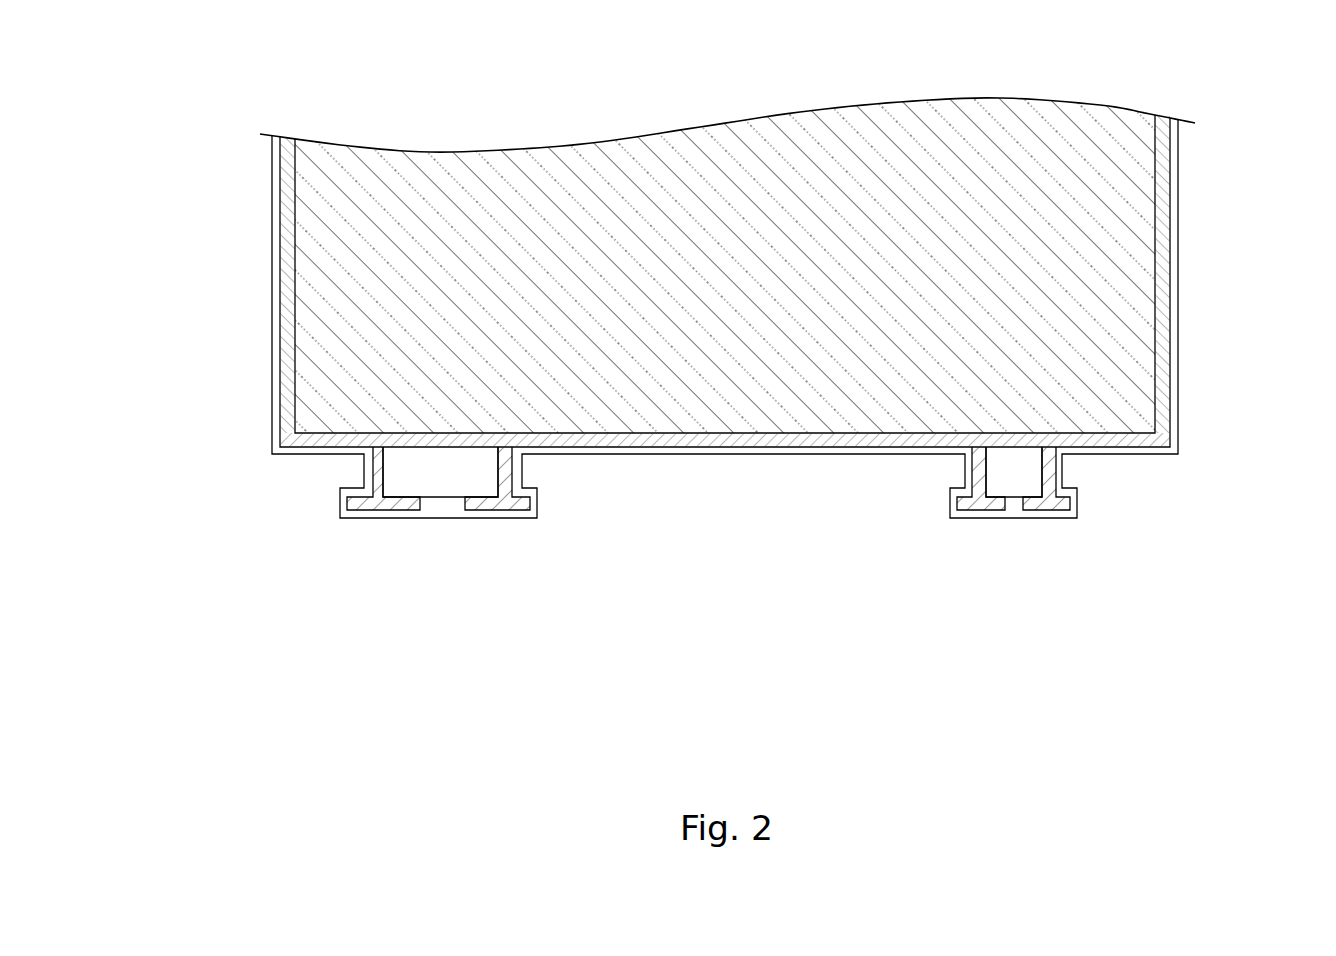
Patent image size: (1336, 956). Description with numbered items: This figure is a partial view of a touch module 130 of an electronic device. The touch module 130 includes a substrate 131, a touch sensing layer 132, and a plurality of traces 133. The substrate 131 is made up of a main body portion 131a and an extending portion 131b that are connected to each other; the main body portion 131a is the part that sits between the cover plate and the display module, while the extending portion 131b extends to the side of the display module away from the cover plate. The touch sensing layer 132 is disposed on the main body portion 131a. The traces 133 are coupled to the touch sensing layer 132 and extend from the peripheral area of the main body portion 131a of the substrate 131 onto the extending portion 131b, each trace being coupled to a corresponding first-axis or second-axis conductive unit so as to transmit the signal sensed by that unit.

The touch module 130 is at (208, 47).
The substrate 131 is at (197, 373).
The main body portion 131a is at (272, 392).
The extending portion 131b is at (338, 491).
The touch sensing layer 132 is at (1128, 247).
The traces 133 is at (1162, 304).